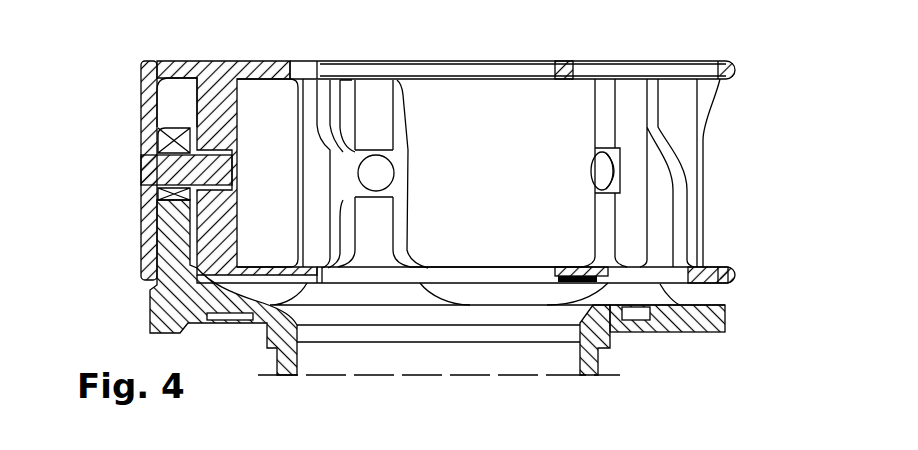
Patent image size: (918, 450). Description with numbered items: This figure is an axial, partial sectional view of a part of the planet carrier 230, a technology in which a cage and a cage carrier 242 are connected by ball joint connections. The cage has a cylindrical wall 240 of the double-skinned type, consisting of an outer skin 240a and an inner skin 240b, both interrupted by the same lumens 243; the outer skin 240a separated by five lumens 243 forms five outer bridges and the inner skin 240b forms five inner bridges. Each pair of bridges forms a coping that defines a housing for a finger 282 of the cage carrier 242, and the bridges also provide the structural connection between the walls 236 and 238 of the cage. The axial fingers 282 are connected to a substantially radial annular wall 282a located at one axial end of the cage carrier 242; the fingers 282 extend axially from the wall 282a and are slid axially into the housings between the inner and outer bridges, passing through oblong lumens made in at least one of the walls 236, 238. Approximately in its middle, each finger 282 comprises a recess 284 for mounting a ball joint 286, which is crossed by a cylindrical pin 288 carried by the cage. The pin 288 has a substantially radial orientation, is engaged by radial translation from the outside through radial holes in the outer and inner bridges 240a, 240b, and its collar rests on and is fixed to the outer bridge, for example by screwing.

The planet carrier 230 is at (768, 0).
The wall 236 is at (725, 284).
The wall 238 is at (623, 70).
The cylindrical wall 240 is at (714, 158).
The outer skin 240a is at (703, 182).
The inner skin 240b is at (603, 108).
The cage carrier 242 is at (622, 366).
The lumens 243 is at (496, 215).
The finger 282 is at (173, 253).
The radial annular wall 282a is at (716, 323).
The recess 284 is at (143, 188).
The ball joint 286 is at (160, 128).
The cylindrical pin 288 is at (143, 157).